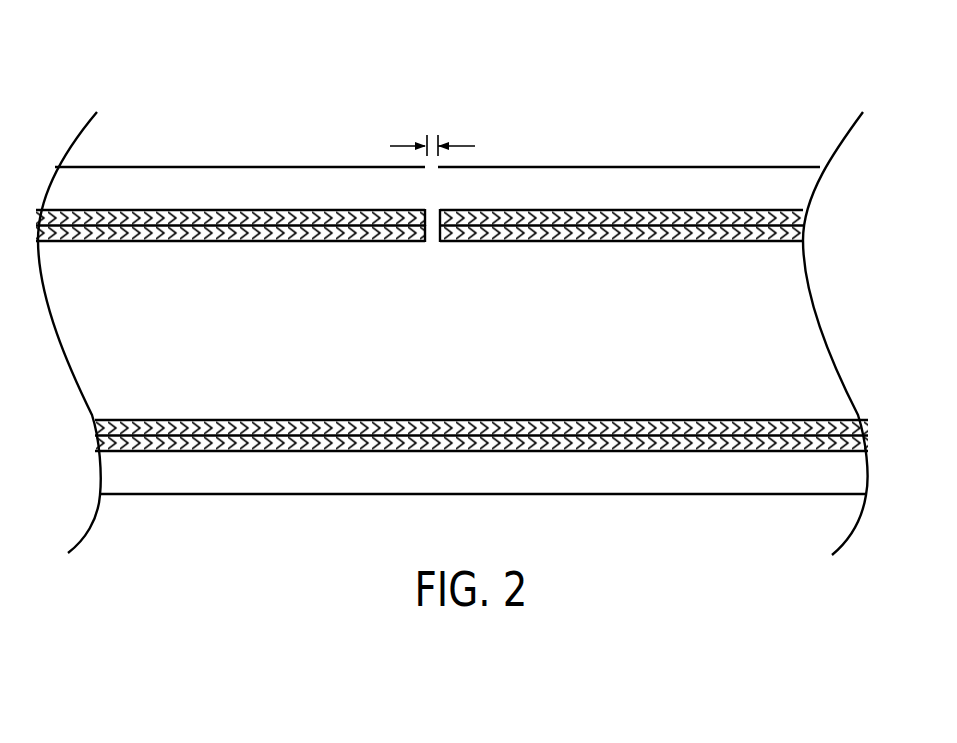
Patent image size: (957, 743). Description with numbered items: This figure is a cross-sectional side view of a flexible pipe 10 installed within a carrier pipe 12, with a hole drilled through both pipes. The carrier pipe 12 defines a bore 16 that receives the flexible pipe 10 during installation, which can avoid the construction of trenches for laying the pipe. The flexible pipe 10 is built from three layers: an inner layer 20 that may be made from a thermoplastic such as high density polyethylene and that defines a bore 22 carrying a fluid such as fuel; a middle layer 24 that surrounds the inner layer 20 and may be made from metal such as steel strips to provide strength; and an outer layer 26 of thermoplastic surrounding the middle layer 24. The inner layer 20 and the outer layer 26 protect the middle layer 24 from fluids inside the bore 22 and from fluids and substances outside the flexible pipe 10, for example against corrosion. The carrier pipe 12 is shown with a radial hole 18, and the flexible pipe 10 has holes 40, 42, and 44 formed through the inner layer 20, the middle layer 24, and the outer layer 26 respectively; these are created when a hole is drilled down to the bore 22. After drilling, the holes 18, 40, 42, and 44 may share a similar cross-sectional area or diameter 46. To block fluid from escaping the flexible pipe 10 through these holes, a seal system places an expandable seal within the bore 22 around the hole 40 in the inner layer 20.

The flexible pipe 10 is at (852, 360).
The carrier pipe 12 is at (190, 167).
The bore 16 is at (169, 198).
The hole 18 is at (452, 122).
The inner layer 20 is at (452, 334).
The bore 22 is at (192, 331).
The middle layer 24 is at (610, 227).
The outer layer 26 is at (720, 212).
The hole 40 is at (428, 242).
The hole 42 is at (436, 232).
The hole 44 is at (428, 210).
The diameter 46 is at (407, 146).